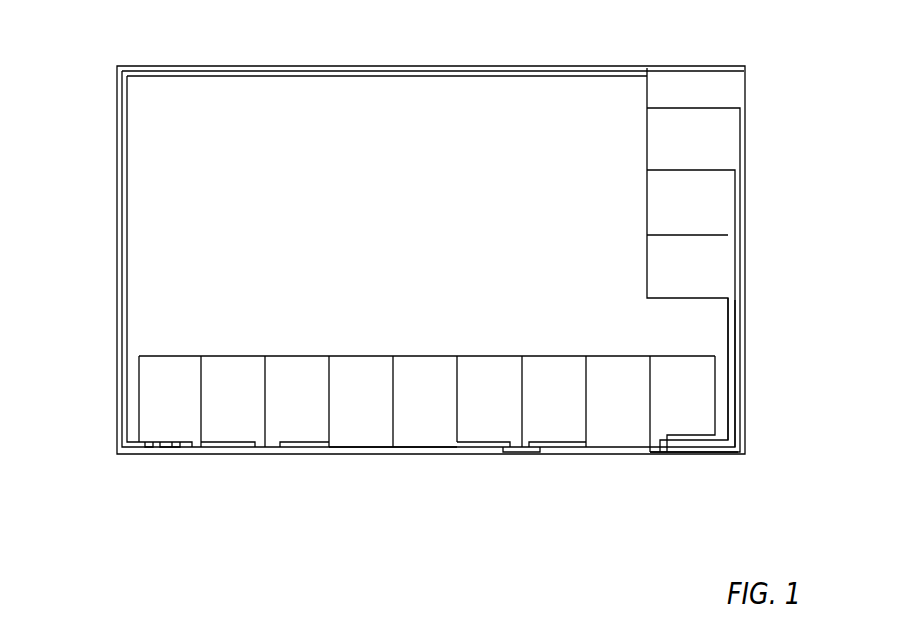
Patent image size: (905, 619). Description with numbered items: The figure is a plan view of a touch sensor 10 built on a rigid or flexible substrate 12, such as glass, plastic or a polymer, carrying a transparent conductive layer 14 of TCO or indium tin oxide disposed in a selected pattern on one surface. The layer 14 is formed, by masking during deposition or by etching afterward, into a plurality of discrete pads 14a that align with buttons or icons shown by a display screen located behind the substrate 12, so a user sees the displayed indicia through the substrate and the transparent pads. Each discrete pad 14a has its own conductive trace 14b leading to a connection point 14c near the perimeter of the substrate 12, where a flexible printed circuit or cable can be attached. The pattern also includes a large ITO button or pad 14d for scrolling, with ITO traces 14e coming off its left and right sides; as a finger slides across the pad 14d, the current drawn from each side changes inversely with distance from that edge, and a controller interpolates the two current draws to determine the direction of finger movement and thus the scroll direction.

The touch sensor 10 is at (87, 72).
The substrate 12 is at (118, 242).
The transparent conductive layer 14 is at (670, 130).
The discrete pads 14a is at (708, 203).
The discrete conductive traces 14b is at (748, 340).
The connection points 14c is at (150, 452).
The large ITO button or pad 14d is at (403, 265).
The ITO traces 14e is at (459, 78).